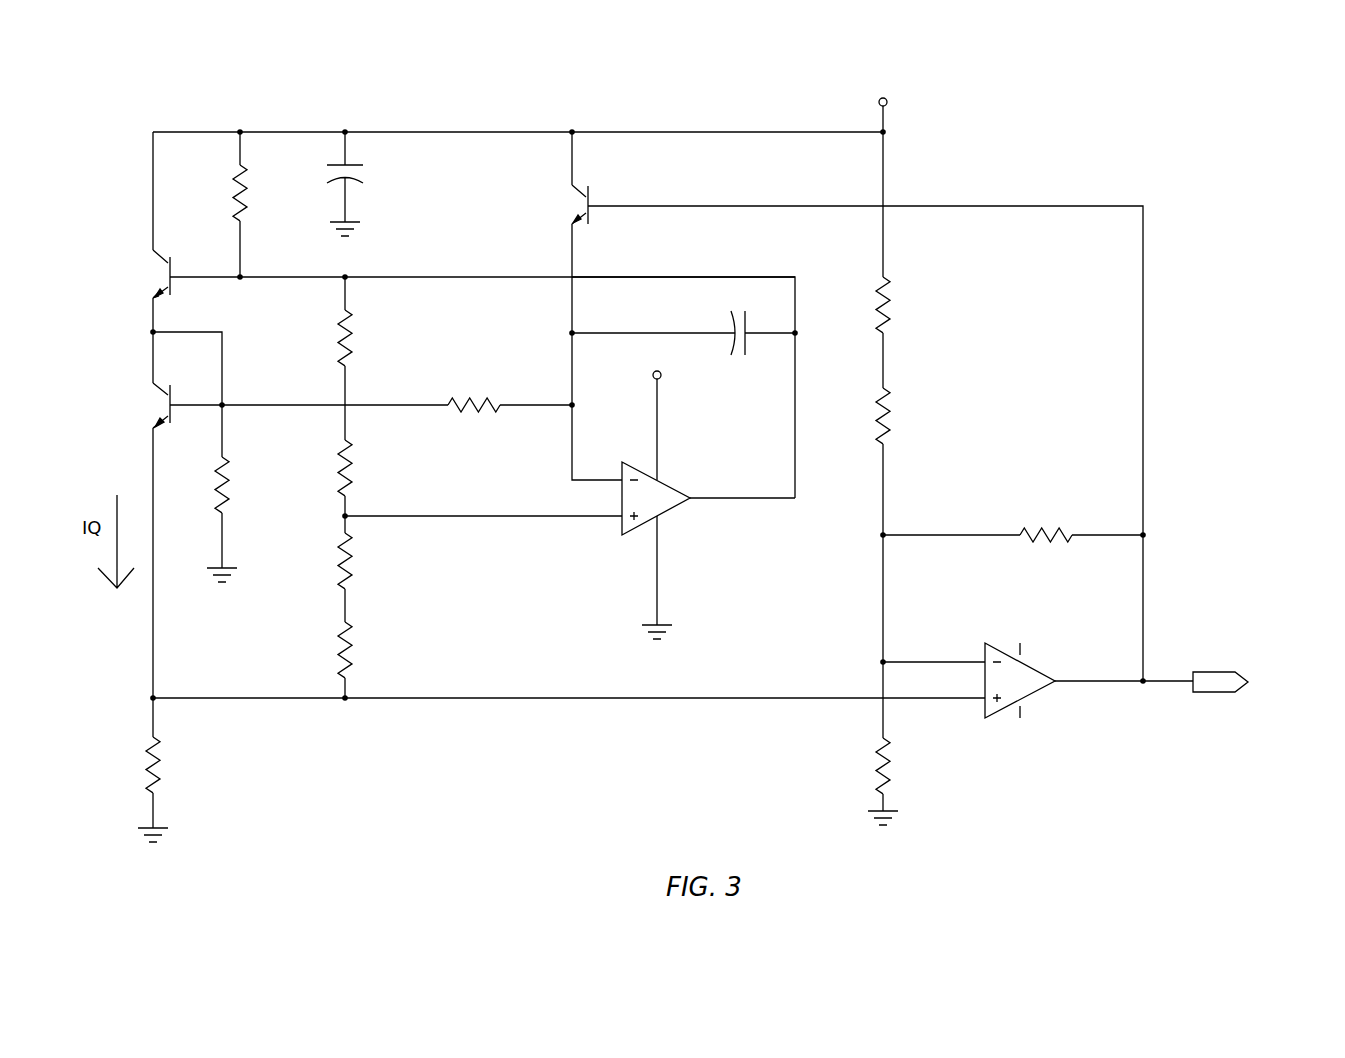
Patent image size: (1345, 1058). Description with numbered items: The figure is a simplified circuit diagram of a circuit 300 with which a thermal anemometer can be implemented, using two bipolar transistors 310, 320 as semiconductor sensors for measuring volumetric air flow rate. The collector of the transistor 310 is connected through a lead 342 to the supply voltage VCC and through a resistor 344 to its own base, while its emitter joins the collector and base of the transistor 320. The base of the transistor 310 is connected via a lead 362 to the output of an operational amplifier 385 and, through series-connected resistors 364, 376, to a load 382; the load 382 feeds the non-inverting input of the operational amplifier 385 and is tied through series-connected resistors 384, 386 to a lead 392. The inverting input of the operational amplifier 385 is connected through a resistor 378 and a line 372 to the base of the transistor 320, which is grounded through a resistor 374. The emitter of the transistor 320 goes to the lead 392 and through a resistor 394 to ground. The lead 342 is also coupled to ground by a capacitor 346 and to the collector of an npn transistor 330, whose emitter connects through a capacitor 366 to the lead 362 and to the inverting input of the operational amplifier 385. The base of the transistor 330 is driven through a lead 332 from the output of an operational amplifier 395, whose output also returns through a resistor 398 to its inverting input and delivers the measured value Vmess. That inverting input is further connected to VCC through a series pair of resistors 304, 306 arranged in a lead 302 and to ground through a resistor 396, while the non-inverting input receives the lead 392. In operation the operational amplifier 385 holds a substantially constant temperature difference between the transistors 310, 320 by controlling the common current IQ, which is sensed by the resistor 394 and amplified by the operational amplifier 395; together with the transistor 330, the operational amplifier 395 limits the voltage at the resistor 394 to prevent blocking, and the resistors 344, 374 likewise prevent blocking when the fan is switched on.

The circuit 300 is at (1197, 126).
The lead 302 is at (886, 175).
The resistor 304 is at (890, 303).
The resistor 306 is at (890, 415).
The bipolar transistor 310 is at (150, 272).
The bipolar transistor 320 is at (150, 400).
The npn transistor 330 is at (564, 204).
The lead 332 is at (723, 206).
The lead 342 is at (717, 132).
The resistor 344 is at (247, 192).
The capacitor 346 is at (356, 182).
The lead 362 is at (680, 277).
The resistor 364 is at (352, 335).
The capacitor 366 is at (733, 328).
The base line 372 is at (252, 405).
The resistor 374 is at (229, 482).
The resistor 376 is at (352, 465).
The resistor 378 is at (484, 402).
The load 382 is at (456, 516).
The resistor 384 is at (352, 555).
The operational amplifier 385 is at (610, 529).
The resistor 386 is at (352, 645).
The lead 392 is at (458, 698).
The resistor 394 is at (160, 760).
The operational amplifier 395 is at (978, 652).
The resistor 396 is at (890, 770).
The resistor 398 is at (1062, 535).